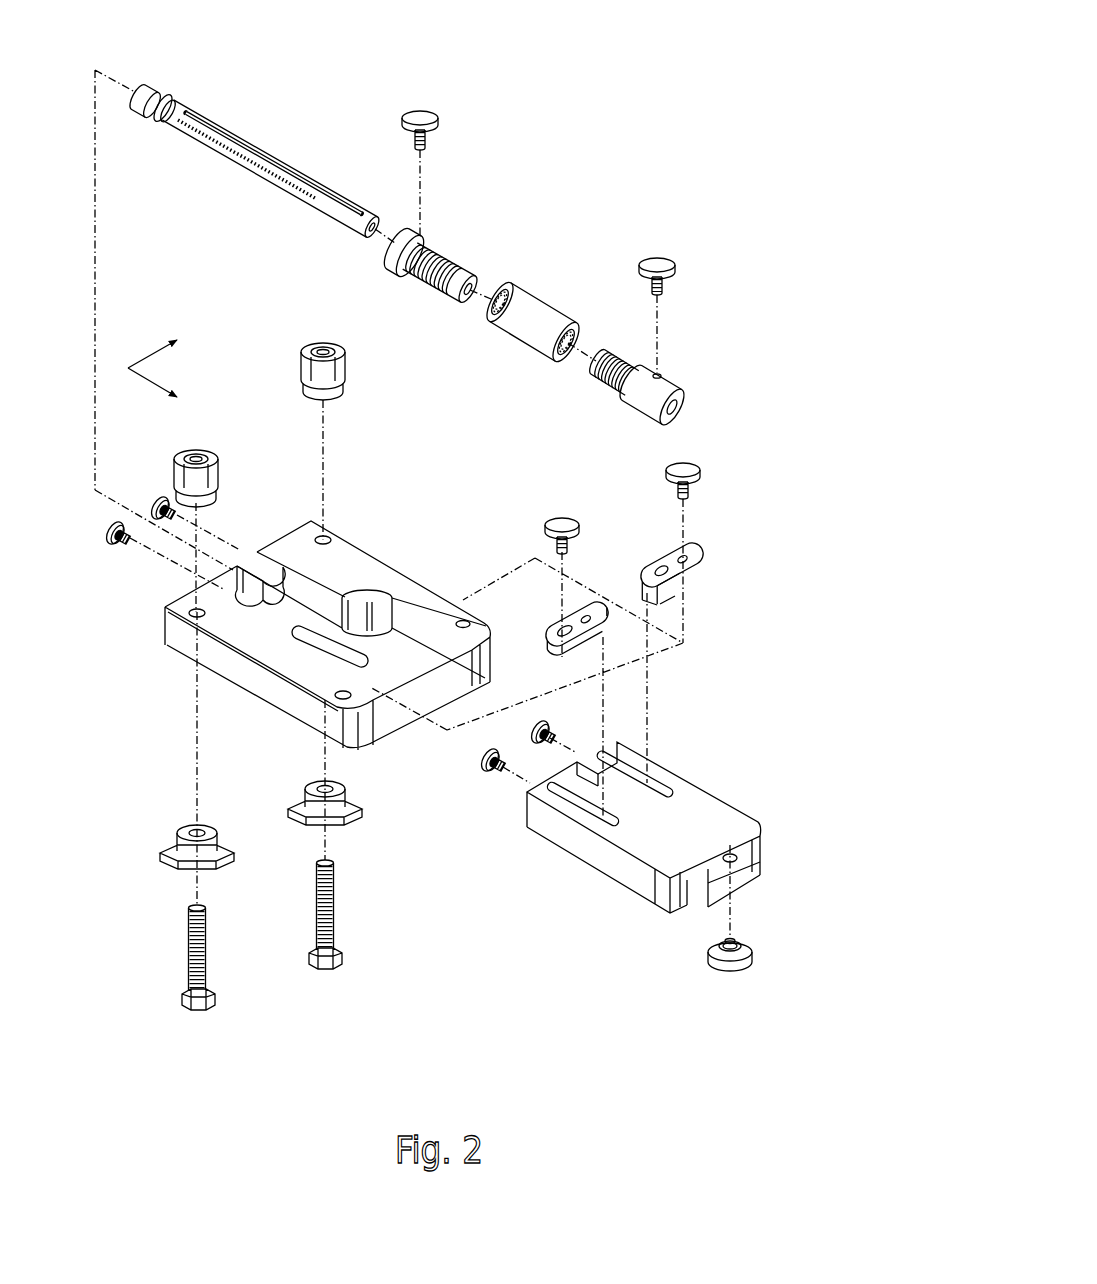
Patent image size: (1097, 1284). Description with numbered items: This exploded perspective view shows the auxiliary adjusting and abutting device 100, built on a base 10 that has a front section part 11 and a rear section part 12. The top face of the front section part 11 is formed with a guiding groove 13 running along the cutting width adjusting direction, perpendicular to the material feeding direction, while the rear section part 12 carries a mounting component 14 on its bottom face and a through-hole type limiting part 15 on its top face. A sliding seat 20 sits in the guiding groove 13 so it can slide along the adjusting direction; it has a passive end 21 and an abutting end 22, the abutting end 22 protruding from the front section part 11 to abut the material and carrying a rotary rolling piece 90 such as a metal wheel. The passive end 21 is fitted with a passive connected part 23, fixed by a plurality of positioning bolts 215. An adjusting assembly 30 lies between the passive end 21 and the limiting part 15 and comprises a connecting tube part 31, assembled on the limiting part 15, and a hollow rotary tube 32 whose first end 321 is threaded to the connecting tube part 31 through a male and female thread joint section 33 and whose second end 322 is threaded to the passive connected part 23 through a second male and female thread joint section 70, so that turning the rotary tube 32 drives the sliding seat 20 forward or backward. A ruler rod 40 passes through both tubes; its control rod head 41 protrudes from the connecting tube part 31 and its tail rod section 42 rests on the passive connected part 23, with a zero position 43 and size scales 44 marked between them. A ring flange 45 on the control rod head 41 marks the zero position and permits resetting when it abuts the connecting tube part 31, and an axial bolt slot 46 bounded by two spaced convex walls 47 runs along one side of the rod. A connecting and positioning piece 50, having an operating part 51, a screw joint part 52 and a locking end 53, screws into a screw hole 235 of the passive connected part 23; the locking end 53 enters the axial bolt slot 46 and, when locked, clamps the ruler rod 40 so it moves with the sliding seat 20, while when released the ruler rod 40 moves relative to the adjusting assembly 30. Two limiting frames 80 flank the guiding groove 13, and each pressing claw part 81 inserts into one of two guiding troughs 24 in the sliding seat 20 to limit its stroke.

The auxiliary adjusting and abutting device 100 is at (703, 22).
The base 10 is at (385, 538).
The front section part 11 is at (320, 677).
The rear section part 12 is at (215, 600).
The guiding groove 13 is at (414, 631).
The mounting component 14 is at (283, 798).
The limiting part 15 is at (277, 567).
The sliding seat 20 is at (580, 877).
The passive end 21 is at (530, 773).
The abutting end 22 is at (763, 862).
The passive connected part 23 is at (627, 417).
The guiding troughs 24 is at (617, 813).
The adjusting assembly 30 is at (533, 165).
The connecting tube part 31 is at (462, 249).
The rotary tube 32 is at (552, 295).
The male and female thread joint section 33 is at (463, 303).
The ruler rod 40 is at (252, 135).
The control rod head 41 is at (150, 86).
The tail rod section 42 is at (323, 214).
The zero position 43 is at (158, 118).
The size scales 44 is at (240, 165).
The ring flange 45 is at (168, 95).
The axial bolt slot 46 is at (289, 173).
The convex walls 47 is at (187, 109).
The connecting and positioning piece 50 is at (680, 250).
The operating part 51 is at (674, 270).
The screw joint part 52 is at (663, 290).
The locking end 53 is at (660, 300).
The second male and female thread joint section 70 is at (598, 368).
The limiting frames 80 is at (590, 638).
The pressing claw part 81 is at (650, 572).
The rotary rolling piece 90 is at (713, 973).
The positioning bolts 215 is at (520, 720).
The screw hole 235 is at (667, 370).
The first end 321 is at (488, 287).
The second end 322 is at (584, 333).